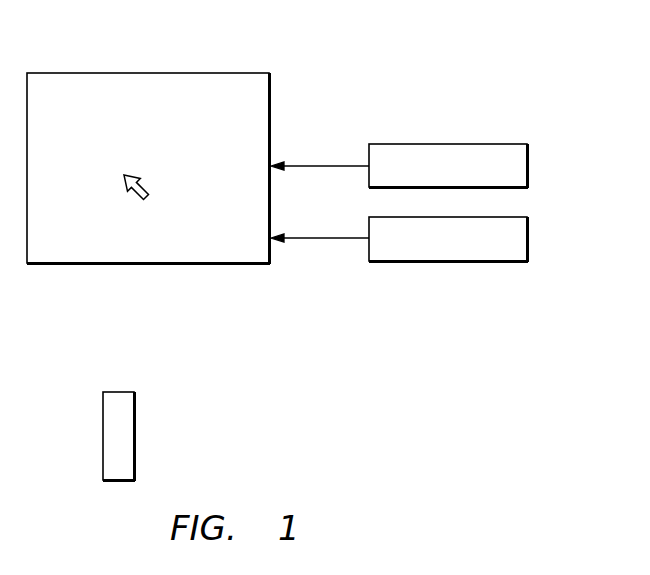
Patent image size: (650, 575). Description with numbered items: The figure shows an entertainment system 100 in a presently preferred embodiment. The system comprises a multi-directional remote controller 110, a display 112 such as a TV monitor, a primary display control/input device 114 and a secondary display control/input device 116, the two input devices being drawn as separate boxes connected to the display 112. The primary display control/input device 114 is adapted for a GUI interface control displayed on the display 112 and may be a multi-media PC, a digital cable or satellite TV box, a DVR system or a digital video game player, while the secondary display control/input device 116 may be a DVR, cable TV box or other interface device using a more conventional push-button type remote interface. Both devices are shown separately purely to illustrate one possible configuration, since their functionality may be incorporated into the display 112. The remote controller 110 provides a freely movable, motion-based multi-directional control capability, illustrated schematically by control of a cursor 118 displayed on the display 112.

The entertainment system 100 is at (437, 80).
The multi-directional remote controller 110 is at (135, 400).
The display 112 is at (193, 73).
The primary display control/input device 114 is at (528, 155).
The secondary display control/input device 116 is at (528, 235).
The cursor 118 is at (149, 184).